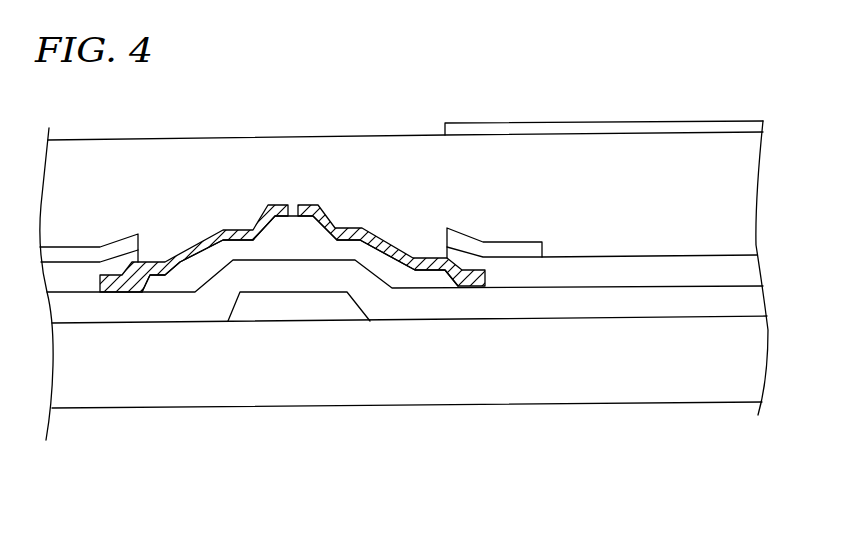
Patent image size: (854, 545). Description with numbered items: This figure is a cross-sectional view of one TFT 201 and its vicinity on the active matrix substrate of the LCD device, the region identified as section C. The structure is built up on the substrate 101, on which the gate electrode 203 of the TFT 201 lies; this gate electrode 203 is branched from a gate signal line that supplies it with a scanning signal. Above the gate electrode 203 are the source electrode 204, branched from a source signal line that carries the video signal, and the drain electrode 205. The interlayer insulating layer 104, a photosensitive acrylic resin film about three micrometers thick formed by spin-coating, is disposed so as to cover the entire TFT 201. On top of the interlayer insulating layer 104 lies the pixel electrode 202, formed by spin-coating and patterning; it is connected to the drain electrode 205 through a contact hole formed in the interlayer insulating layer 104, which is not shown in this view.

The substrate 101 is at (201, 385).
The interlayer insulating layer 104 is at (148, 172).
The TFT 201 is at (288, 168).
The pixel electrode 202 is at (648, 127).
The gate electrode 203 is at (328, 312).
The source electrode 204 is at (79, 283).
The drain electrode 205 is at (633, 273).